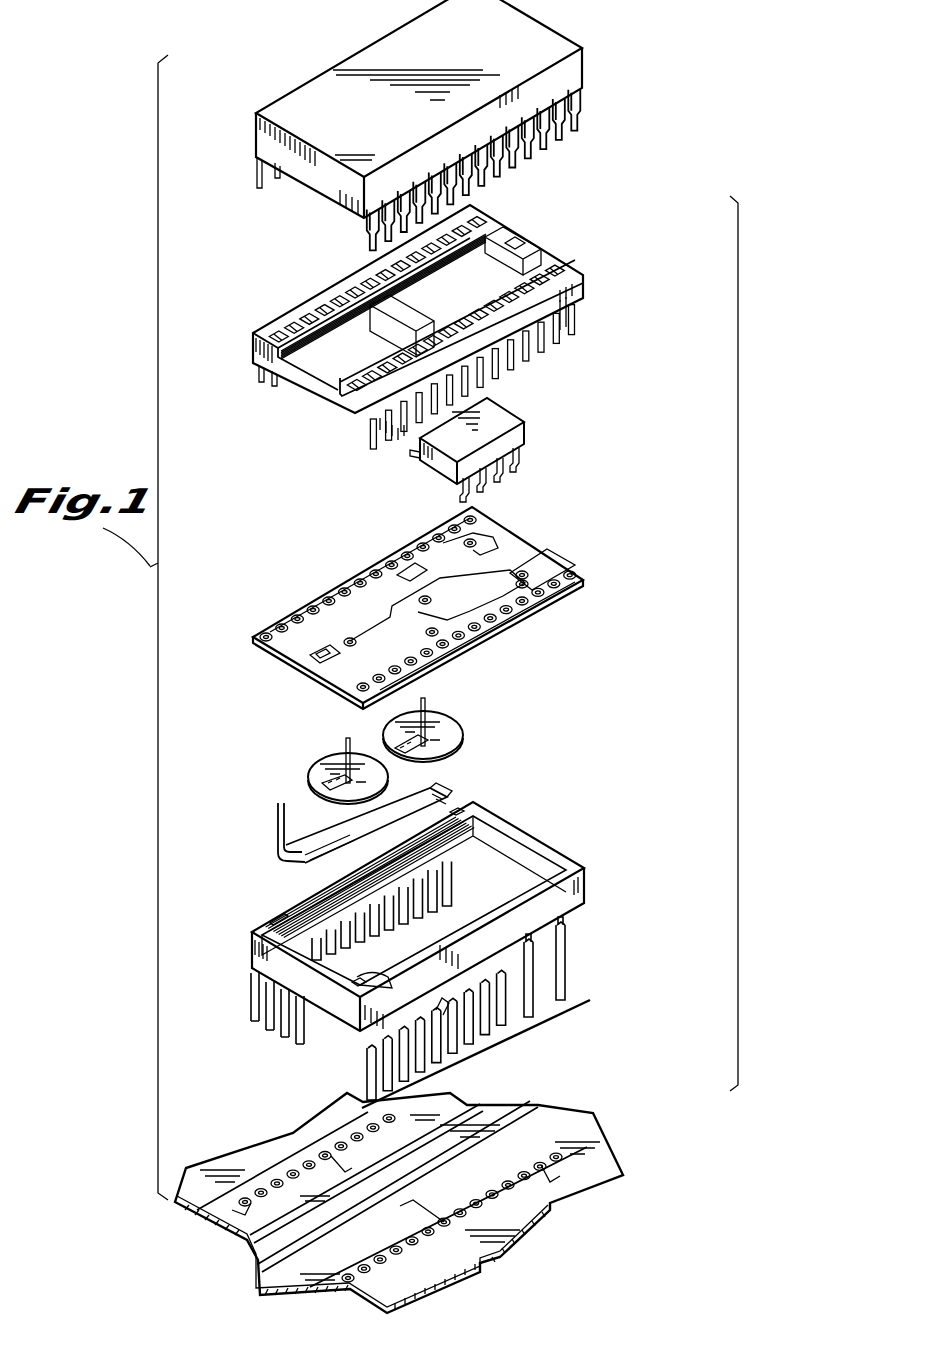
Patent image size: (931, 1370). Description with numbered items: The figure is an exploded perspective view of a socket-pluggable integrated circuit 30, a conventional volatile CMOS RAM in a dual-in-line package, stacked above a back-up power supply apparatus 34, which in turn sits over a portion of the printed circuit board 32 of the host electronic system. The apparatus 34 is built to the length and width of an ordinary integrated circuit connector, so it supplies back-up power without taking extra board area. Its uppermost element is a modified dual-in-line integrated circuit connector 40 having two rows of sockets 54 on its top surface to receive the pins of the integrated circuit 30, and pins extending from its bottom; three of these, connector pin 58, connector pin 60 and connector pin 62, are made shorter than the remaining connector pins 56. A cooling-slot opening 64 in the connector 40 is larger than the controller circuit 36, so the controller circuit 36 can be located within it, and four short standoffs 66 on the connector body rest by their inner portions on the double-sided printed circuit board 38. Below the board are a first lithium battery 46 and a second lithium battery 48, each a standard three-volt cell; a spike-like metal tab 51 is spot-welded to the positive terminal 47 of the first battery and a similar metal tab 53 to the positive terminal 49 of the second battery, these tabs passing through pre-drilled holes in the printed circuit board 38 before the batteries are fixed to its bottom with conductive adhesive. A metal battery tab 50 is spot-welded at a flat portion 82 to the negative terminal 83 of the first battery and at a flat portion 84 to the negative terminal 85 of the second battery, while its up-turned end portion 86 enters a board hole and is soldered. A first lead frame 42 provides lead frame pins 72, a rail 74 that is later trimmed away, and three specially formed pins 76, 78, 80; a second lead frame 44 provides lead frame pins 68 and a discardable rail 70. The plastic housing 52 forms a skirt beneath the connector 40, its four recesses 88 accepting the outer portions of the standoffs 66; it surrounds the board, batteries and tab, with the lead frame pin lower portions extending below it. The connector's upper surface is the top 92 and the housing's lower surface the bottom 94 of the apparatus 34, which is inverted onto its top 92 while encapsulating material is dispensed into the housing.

The socket-pluggable integrated circuit 30 is at (632, 49).
The printed circuit board 32 is at (673, 1181).
The apparatus 34 is at (780, 584).
The controller circuit 36 is at (513, 417).
The double-sided printed circuit board 38 is at (530, 543).
The modified dual-in-line integrated circuit connector 40 is at (434, 351).
The first lead frame 42 is at (463, 1012).
The second lead frame 44 is at (245, 1018).
The first lithium battery 46 is at (474, 706).
The positive terminal 47 is at (447, 723).
The second lithium battery 48 is at (306, 747).
The positive terminal 49 is at (317, 757).
The metal battery tab 50 is at (384, 828).
The metal tab 51 is at (427, 700).
The plastic housing 52 is at (423, 933).
The metal tab 53 is at (347, 742).
The sockets 54 is at (290, 325).
The connector pins 56 is at (265, 385).
The connector pin 58 is at (443, 405).
The connector pin 60 is at (540, 332).
The connector pin 62 is at (572, 308).
The opening 64 is at (520, 253).
The standoffs 66 is at (558, 310).
The lead frame pins 68 is at (302, 897).
The rail 70 is at (288, 1020).
The lead frame pins 72 is at (367, 1040).
The rail 74 is at (522, 1025).
The pin 76 is at (453, 1033).
The pin 78 is at (568, 993).
The pin 80 is at (568, 947).
The flat portion 82 is at (438, 792).
The negative terminal 83 is at (453, 758).
The flat portion 84 is at (307, 862).
The negative terminal 85 is at (317, 797).
The end portion 86 is at (280, 803).
The recesses 88 is at (567, 863).
The top 92 is at (548, 255).
The bottom 94 is at (250, 970).